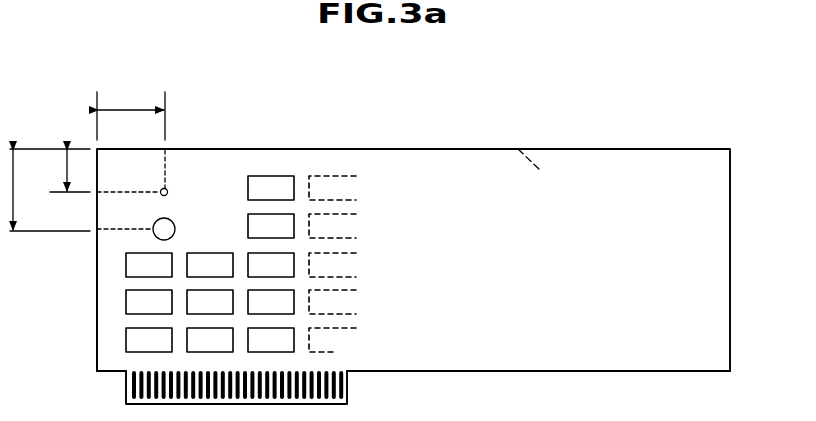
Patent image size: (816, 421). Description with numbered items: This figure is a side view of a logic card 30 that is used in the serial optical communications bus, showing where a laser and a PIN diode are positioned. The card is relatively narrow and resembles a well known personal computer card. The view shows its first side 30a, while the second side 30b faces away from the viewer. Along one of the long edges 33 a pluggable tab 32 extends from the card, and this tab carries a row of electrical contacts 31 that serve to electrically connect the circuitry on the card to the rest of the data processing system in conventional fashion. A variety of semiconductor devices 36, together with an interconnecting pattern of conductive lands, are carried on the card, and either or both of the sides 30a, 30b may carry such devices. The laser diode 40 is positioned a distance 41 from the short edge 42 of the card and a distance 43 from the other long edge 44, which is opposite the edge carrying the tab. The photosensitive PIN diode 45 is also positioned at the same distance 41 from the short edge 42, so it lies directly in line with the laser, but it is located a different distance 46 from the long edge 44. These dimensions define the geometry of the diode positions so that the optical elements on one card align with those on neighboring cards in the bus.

The logic card 30 is at (508, 271).
The first side 30a is at (432, 148).
The second side 30b is at (518, 149).
The electrical contacts 31 is at (328, 373).
The pluggable tab 32 is at (347, 389).
The long edge 33 is at (568, 371).
The semiconductor devices 36 is at (126, 332).
The laser diode 40 is at (171, 192).
The distance 41 is at (135, 108).
The short edge 42 is at (97, 292).
The distance 43 is at (56, 174).
The long edge 44 is at (340, 148).
The photosensitive PIN diode 45 is at (176, 228).
The distance 46 is at (17, 198).